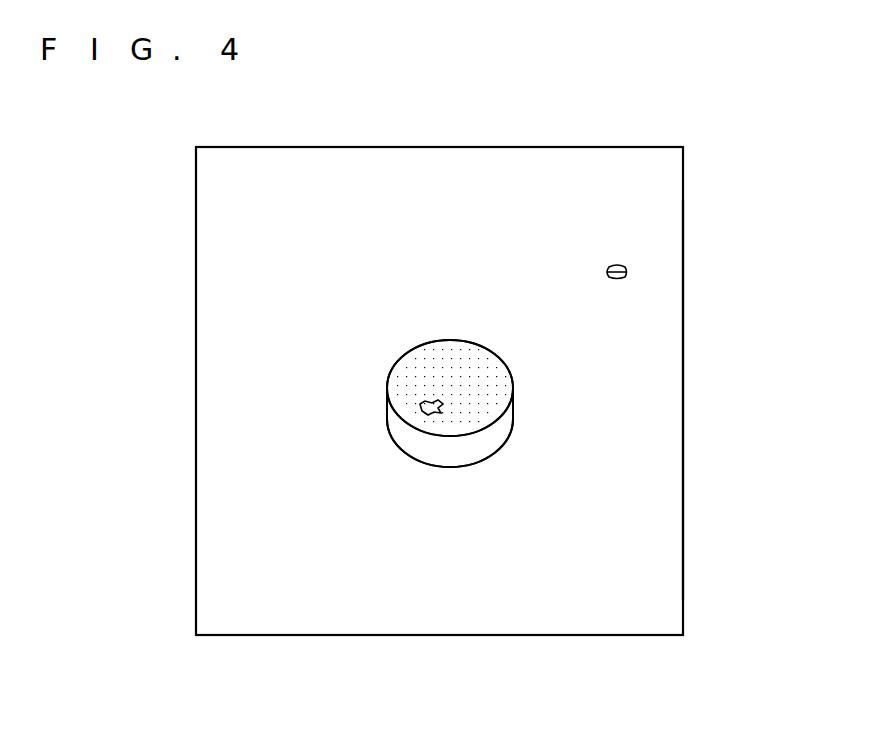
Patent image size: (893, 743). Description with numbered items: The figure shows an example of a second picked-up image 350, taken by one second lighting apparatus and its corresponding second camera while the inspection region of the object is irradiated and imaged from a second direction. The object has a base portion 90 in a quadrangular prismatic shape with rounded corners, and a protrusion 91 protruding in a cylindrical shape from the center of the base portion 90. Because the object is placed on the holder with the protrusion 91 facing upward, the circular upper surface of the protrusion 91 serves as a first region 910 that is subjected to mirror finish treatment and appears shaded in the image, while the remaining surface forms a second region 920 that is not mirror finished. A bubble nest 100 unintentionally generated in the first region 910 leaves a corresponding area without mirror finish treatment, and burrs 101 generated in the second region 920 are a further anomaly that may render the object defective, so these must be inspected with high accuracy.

The second picked-up image 350 is at (582, 146).
The base portion 90 is at (702, 370).
The protrusion 91 is at (527, 363).
The first region 910 is at (478, 362).
The second region 920 is at (490, 438).
The nest 100 is at (420, 404).
The burrs 101 is at (599, 255).